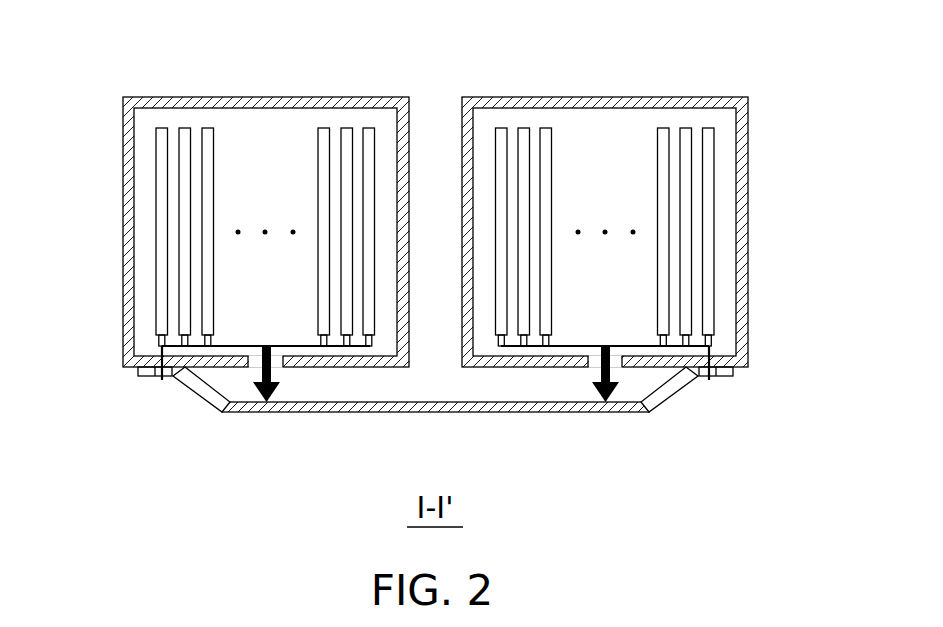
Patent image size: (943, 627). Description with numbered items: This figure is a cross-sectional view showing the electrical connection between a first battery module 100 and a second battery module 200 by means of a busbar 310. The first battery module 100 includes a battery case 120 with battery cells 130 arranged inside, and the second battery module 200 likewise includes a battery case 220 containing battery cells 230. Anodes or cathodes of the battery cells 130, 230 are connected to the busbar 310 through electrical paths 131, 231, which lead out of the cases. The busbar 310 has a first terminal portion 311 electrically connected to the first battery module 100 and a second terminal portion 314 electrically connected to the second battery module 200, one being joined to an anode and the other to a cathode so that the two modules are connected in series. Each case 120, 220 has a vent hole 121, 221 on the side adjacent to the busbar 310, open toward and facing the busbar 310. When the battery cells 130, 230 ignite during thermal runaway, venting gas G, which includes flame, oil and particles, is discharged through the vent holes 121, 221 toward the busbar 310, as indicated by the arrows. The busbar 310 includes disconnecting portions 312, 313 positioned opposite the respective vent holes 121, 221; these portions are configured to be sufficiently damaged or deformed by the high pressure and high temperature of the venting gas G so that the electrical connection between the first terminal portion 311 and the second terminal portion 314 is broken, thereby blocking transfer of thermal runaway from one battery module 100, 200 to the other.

The first battery module 100 is at (224, 263).
The battery case 120 is at (125, 270).
The vent hole 121 is at (283, 362).
The battery cells 130 is at (163, 125).
The electrical path 131 is at (161, 343).
The second battery module 200 is at (646, 263).
The battery case 220 is at (747, 292).
The vent hole 221 is at (588, 362).
The battery cells 230 is at (502, 125).
The electrical path 231 is at (710, 343).
The busbar 310 is at (380, 412).
The first terminal portion 311 is at (160, 377).
The disconnecting portion 312 is at (233, 432).
The disconnecting portion 313 is at (572, 432).
The second terminal portion 314 is at (712, 377).
The venting gas G is at (223, 412).